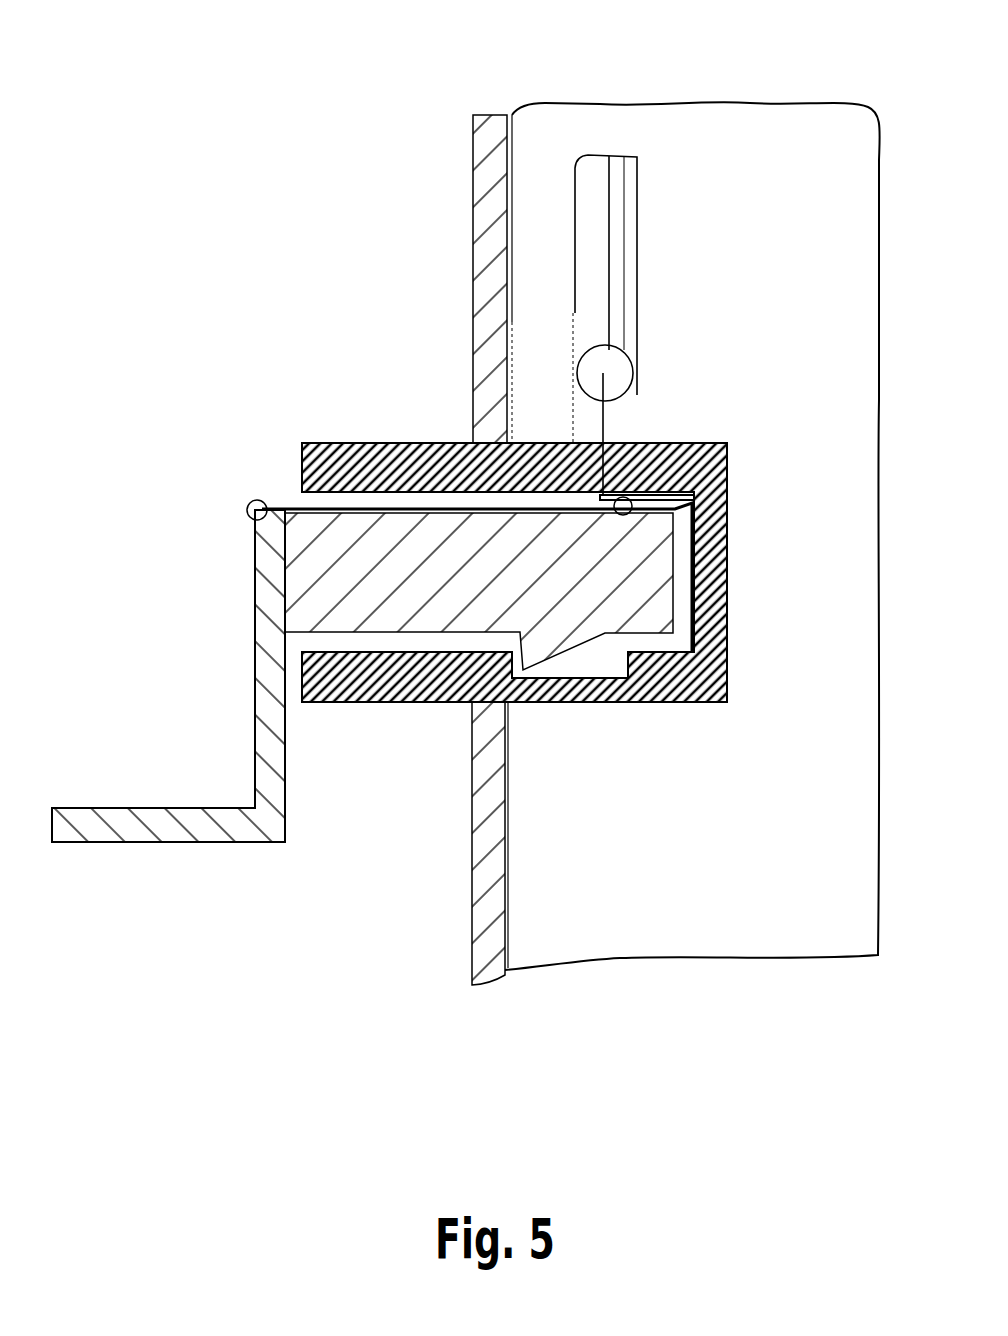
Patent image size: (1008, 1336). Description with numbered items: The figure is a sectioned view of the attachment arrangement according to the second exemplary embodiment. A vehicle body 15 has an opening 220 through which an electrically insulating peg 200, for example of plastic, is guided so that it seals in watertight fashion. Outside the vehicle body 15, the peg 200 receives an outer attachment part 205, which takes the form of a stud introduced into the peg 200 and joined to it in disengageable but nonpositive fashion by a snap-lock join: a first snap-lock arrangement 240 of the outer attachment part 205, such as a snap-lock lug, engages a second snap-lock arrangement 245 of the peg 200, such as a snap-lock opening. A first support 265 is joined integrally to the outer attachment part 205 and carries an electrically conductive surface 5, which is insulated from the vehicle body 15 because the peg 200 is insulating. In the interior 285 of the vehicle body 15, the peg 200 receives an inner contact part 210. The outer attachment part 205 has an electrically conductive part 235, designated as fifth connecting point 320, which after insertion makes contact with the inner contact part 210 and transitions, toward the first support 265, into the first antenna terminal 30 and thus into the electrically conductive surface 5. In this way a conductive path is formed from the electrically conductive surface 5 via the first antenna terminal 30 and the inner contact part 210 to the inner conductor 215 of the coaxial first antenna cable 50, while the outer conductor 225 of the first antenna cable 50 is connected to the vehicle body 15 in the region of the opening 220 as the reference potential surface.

The interior of vehicle body 285 is at (723, 120).
The outer conductor of first antenna cable 225 is at (490, 358).
The vehicle body 15 is at (487, 923).
The first antenna cable 50 is at (615, 237).
The inner conductor of first antenna cable 215 is at (605, 425).
The fifth connecting point 320 is at (633, 480).
The peg 200 is at (435, 453).
The electrically conductive part 235 is at (358, 510).
The inner contact part 210 is at (680, 505).
The outer attachment part 205 is at (640, 580).
The first antenna terminal 30 is at (247, 509).
The electrically conductive surface 5 is at (130, 808).
The first support 265 is at (180, 828).
The opening 220 is at (472, 703).
The first snap-lock arrangement 240 is at (558, 703).
The second snap-lock arrangement 245 is at (608, 703).